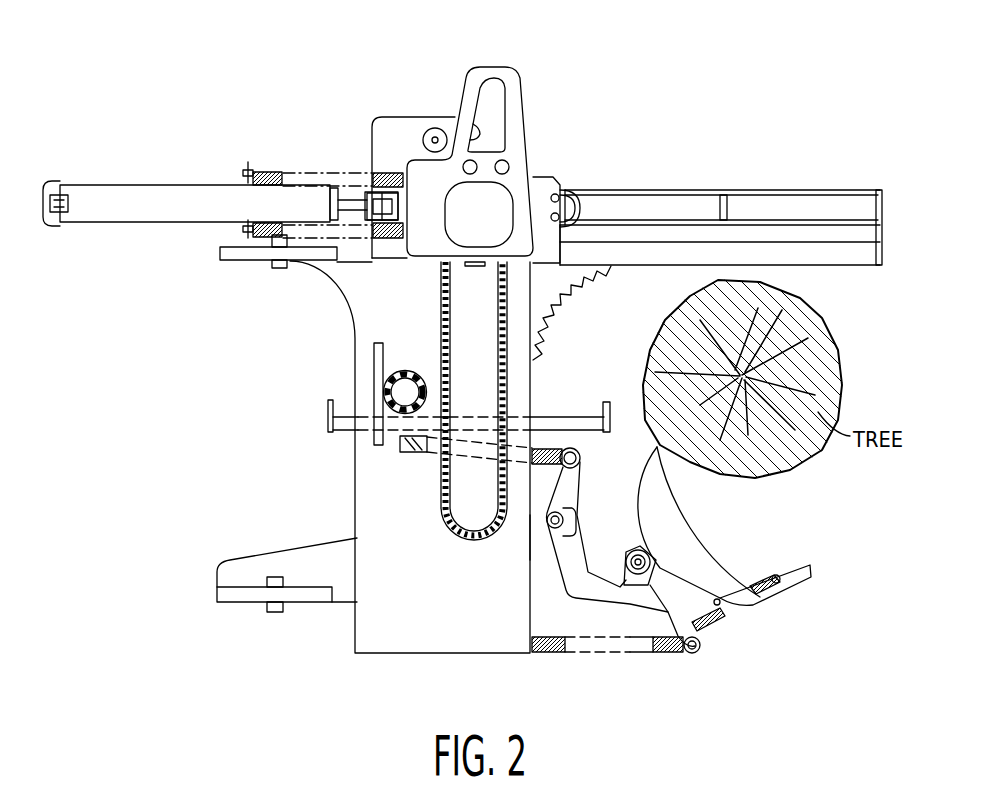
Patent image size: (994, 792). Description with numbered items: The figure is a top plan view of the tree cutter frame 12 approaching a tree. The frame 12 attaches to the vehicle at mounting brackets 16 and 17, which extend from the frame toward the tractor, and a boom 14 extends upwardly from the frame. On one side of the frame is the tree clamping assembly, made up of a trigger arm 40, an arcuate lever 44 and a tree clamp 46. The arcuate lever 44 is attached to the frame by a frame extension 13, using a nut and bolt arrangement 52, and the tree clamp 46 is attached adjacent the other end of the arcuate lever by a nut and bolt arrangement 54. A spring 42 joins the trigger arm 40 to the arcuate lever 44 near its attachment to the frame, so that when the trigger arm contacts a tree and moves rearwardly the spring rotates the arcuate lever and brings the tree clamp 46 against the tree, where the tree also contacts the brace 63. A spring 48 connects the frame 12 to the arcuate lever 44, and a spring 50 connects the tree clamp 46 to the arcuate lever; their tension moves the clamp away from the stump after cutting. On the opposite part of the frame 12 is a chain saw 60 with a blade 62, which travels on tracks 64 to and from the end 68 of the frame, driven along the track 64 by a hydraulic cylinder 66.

The frame 12 is at (456, 641).
The frame extension 13 is at (530, 536).
The boom 14 is at (388, 376).
The mounting bracket 16 is at (240, 596).
The mounting bracket 17 is at (244, 255).
The trigger arm 40 is at (328, 423).
The spring 42 is at (553, 457).
The arcuate lever 44 is at (605, 598).
The tree clamp 46 is at (790, 578).
The spring 48 is at (543, 653).
The spring 50 is at (718, 622).
The nut and bolt arrangement 52 is at (565, 525).
The nut and bolt arrangement 54 is at (636, 575).
The chain saw 60 is at (513, 153).
The blade 62 is at (490, 342).
The brace 63 is at (567, 292).
The tracks 64 is at (737, 190).
The hydraulic cylinder 66 is at (167, 197).
The end of the frame 68 is at (876, 190).